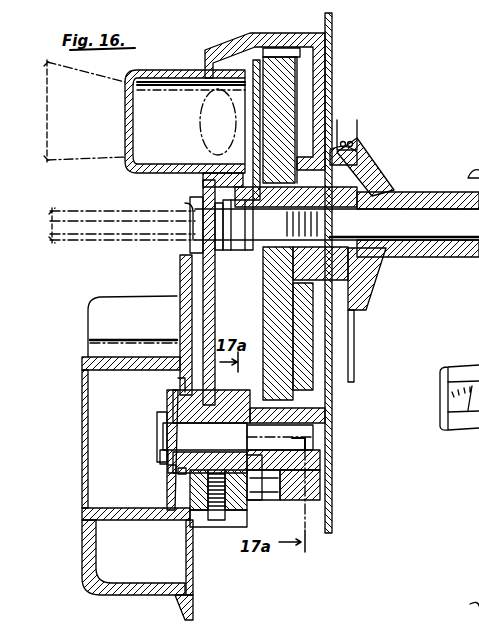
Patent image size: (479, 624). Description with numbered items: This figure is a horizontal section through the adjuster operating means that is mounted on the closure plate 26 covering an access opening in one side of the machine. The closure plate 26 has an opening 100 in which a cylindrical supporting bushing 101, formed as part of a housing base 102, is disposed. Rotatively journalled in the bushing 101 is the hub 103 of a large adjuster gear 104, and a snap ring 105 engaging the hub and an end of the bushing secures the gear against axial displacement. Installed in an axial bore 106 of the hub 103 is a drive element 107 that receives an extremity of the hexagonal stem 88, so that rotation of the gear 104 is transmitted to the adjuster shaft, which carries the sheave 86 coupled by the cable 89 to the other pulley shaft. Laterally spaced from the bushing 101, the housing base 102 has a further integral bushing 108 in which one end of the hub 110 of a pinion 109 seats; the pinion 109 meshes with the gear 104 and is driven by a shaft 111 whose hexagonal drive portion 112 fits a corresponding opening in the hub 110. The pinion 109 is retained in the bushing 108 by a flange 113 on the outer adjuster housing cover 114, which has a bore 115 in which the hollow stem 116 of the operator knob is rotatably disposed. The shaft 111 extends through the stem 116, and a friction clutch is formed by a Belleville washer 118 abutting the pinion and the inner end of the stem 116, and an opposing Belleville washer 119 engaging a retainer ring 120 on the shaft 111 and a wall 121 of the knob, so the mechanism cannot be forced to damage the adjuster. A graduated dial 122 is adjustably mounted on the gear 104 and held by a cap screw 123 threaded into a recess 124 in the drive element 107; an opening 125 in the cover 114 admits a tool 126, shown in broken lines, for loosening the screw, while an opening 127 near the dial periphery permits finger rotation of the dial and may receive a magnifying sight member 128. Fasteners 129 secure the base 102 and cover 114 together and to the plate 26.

The closure plate 26 is at (337, 520).
The sheave 86 is at (368, 305).
The hexagonal stem 88 is at (448, 224).
The cable 89 is at (355, 357).
The opening 100 is at (347, 150).
The supporting bushing 101 is at (357, 165).
The housing base 102 is at (333, 45).
The hub 103 is at (362, 187).
The adjuster gear 104 is at (287, 50).
The snap ring 105 is at (358, 283).
The axial bore 106 is at (366, 262).
The drive element 107 is at (418, 180).
The bushing 108 is at (320, 453).
The pinion 109 is at (305, 473).
The hub 110 is at (320, 410).
The shaft 111 is at (241, 433).
The hexagonal drive portion 112 is at (313, 437).
The flange 113 is at (252, 507).
The adjuster housing cover 114 is at (217, 285).
The bore 115 is at (178, 408).
The hollow stem 116 is at (166, 470).
The Belleville washer 118 is at (245, 520).
The Belleville washer 119 is at (185, 472).
The retainer ring 120 is at (163, 455).
The wall 121 is at (184, 390).
The graduated dial 122 is at (257, 314).
The cap screw 123 is at (217, 254).
The threaded recess 124 is at (296, 193).
The opening 125 is at (185, 203).
The tool 126 is at (124, 238).
The opening 127 is at (200, 173).
The magnifying sight member 128 is at (125, 114).
The fasteners 129 is at (344, 72).